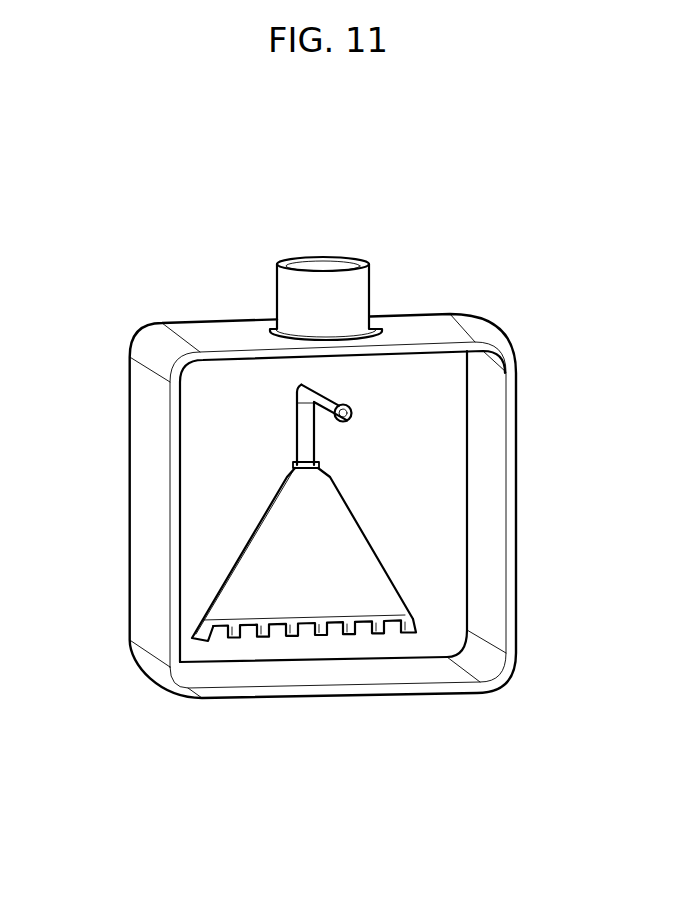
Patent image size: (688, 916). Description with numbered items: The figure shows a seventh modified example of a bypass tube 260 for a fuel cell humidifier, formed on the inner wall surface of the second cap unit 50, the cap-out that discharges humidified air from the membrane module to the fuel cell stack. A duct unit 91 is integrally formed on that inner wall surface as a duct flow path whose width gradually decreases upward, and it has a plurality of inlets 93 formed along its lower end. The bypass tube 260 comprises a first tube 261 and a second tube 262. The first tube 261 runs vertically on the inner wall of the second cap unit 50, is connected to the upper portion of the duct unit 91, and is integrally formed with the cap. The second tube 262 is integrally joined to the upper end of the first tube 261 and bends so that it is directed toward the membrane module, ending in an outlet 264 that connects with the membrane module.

The second cap unit 50 is at (524, 497).
The duct unit 91 is at (345, 562).
The inlets 93 is at (272, 640).
The bypass tube 260 is at (321, 447).
The first tube 261 is at (296, 403).
The second tube 262 is at (327, 400).
The outlet 264 is at (348, 420).